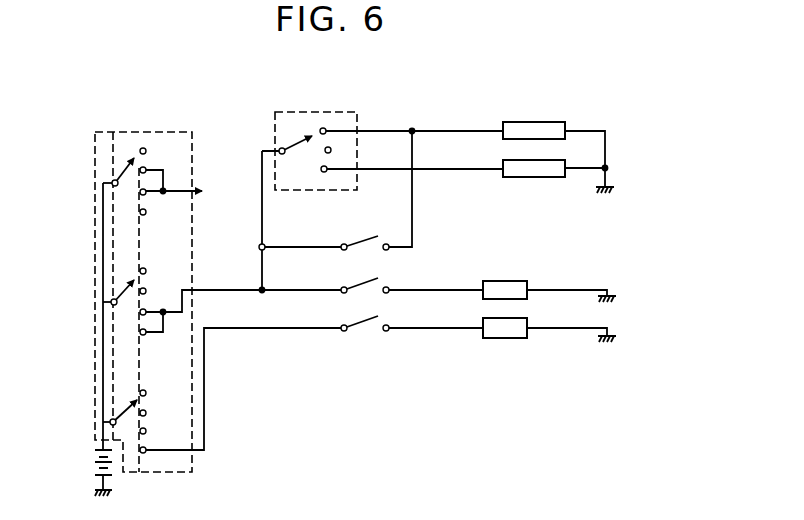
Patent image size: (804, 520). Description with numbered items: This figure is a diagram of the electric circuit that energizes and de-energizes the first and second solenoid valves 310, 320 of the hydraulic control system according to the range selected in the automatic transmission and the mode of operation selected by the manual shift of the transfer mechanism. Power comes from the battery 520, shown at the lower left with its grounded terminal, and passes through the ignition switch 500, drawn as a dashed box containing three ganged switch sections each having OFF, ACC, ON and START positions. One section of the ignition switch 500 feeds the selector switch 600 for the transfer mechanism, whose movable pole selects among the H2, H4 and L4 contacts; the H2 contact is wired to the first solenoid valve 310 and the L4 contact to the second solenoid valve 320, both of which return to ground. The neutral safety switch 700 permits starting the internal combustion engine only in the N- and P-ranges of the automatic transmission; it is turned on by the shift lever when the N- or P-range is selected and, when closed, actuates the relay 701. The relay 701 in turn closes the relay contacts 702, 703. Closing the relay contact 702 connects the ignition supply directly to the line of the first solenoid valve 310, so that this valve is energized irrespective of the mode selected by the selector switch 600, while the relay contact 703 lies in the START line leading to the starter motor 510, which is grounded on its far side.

The ignition switch 500 is at (152, 131).
The battery 520 is at (95, 467).
The selector switch 600 is at (303, 110).
The first solenoid valve 310 is at (537, 121).
The second solenoid valve 320 is at (547, 178).
The relay contact 702 is at (372, 237).
The neutral safety switch 700 is at (373, 278).
The relay contact 703 is at (373, 318).
The relay 701 is at (515, 280).
The starter motor 510 is at (520, 318).